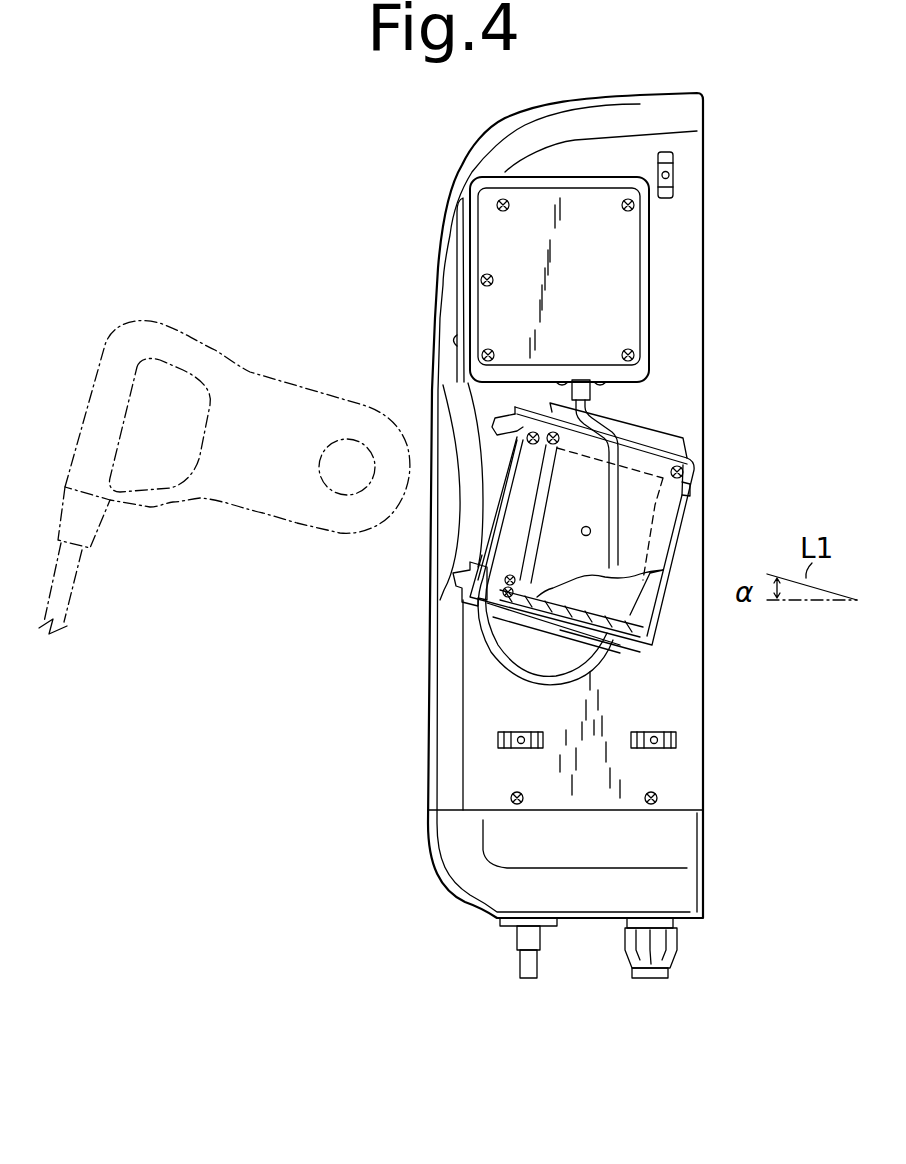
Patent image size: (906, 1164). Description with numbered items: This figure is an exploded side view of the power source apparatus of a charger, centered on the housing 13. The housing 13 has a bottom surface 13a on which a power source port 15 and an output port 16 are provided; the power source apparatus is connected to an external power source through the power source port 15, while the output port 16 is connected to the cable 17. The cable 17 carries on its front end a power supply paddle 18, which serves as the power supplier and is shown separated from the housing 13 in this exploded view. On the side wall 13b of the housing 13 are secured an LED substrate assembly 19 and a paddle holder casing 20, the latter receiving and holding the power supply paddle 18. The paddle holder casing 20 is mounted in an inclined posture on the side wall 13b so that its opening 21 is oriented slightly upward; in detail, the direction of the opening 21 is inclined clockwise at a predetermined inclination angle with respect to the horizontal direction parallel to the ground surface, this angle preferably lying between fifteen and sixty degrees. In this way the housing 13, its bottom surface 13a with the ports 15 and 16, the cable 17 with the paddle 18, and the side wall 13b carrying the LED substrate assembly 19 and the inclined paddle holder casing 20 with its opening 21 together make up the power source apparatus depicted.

The housing 13 is at (703, 104).
The bottom surface 13a is at (683, 924).
The side wall 13b is at (672, 691).
The power source port 15 is at (657, 965).
The output port 16 is at (520, 966).
The cable 17 is at (58, 628).
The power supply paddle 18 is at (186, 340).
The LED substrate assembly 19 is at (620, 243).
The paddle holder casing 20 is at (667, 498).
The opening 21 is at (467, 563).